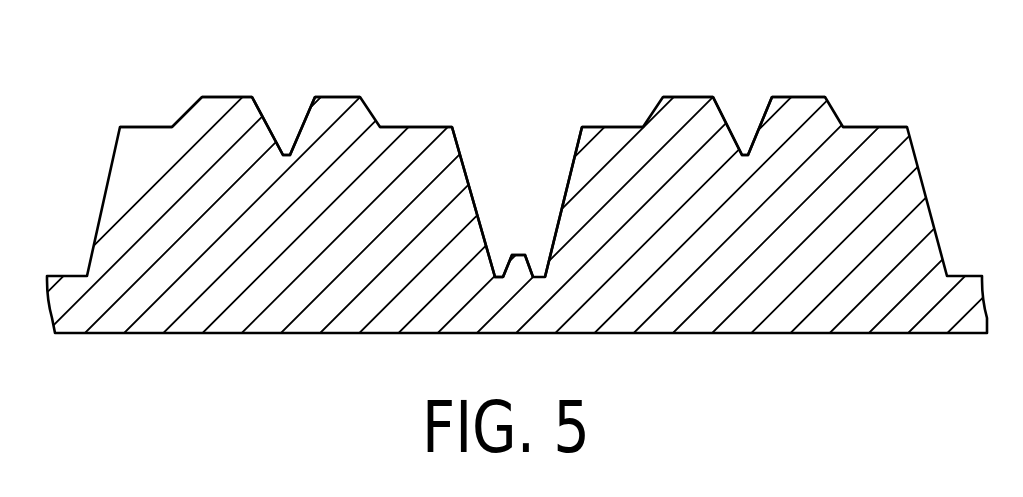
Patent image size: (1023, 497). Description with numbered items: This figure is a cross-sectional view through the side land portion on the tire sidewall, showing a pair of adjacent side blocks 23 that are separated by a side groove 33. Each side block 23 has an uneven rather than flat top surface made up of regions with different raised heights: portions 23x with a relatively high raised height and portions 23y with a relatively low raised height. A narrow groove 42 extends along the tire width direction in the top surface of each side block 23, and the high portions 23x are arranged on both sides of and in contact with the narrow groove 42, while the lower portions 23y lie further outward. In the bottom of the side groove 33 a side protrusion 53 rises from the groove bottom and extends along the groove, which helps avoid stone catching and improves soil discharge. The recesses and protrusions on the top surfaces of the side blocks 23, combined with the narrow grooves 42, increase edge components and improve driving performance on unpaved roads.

The side block 23 is at (140, 148).
The portion with relatively high raised height 23x is at (222, 97).
The portion with relatively low raised height 23y is at (150, 127).
The narrow groove 42 is at (285, 143).
The side groove 33 is at (537, 262).
The side protrusion 53 is at (510, 252).